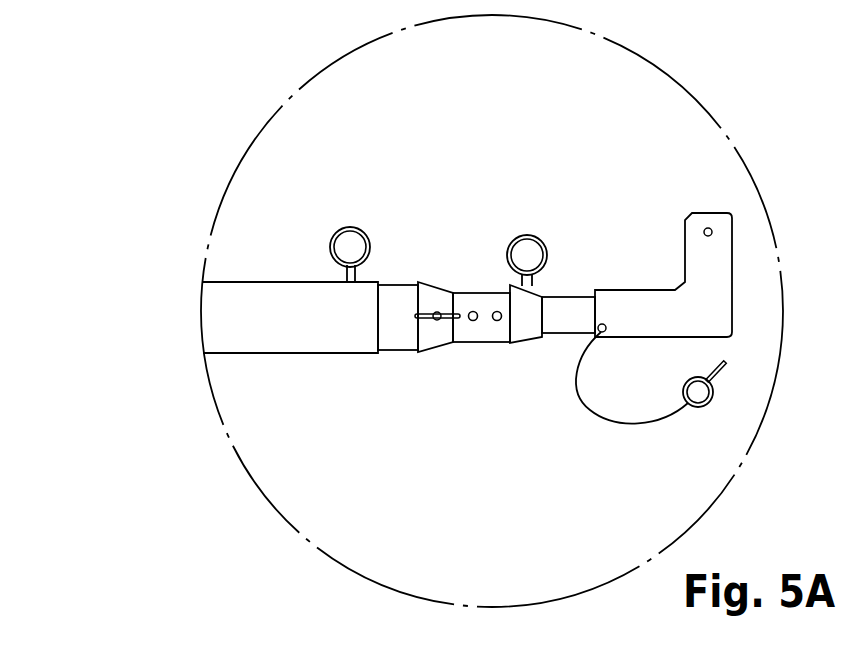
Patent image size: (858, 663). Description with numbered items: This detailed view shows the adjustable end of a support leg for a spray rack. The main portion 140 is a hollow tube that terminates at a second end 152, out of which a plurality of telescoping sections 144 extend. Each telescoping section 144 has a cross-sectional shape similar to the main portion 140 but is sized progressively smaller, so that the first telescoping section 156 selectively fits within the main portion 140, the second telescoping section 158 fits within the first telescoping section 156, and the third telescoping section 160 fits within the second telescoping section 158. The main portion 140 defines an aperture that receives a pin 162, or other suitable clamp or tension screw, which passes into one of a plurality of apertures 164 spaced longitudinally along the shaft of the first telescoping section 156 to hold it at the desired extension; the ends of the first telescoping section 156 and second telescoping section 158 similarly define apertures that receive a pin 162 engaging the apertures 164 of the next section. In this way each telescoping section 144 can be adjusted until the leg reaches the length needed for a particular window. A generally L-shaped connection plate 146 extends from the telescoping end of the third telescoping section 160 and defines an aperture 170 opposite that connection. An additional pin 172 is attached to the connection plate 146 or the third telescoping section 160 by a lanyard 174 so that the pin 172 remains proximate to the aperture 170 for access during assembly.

The main portion 140 is at (228, 322).
The telescoping sections 144 is at (398, 343).
The connection plate 146 is at (717, 302).
The second end 152 is at (327, 351).
The first telescoping section 156 is at (397, 290).
The second telescoping section 158 is at (488, 342).
The third telescoping section 160 is at (565, 333).
The pin 162 is at (345, 278).
The apertures 164 is at (497, 311).
The aperture 170 is at (713, 232).
The additional pin 172 is at (720, 377).
The lanyard 174 is at (623, 427).